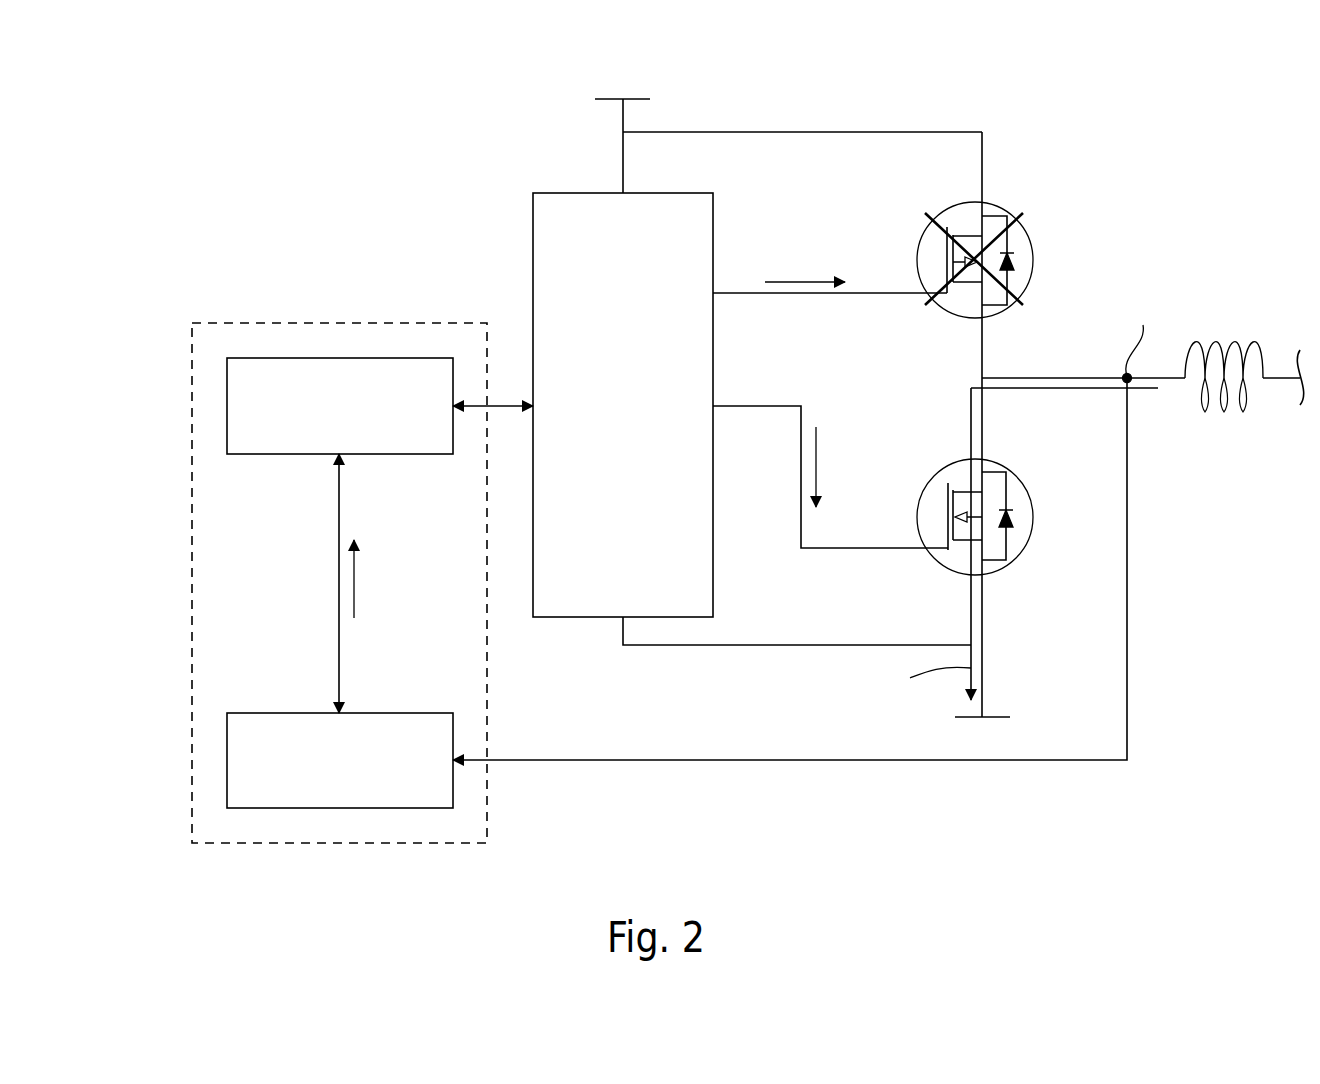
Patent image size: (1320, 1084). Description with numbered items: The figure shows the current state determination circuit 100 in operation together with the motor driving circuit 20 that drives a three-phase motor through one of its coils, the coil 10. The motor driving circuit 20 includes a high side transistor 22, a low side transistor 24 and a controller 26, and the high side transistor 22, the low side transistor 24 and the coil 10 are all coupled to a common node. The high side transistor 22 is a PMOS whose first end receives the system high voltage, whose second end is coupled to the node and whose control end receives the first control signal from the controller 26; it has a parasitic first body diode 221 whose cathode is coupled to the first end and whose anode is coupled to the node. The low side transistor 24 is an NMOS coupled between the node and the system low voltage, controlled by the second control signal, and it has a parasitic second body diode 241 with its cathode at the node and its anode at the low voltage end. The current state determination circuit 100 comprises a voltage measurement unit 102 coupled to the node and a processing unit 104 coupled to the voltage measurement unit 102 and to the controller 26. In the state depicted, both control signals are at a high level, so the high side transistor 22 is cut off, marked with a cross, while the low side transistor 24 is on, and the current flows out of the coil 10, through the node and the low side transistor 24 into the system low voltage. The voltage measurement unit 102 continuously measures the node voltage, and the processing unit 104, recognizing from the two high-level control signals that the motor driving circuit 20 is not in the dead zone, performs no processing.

The motor driving circuit 20 is at (536, 84).
The controller 26 is at (548, 223).
The high side transistor 22 is at (940, 238).
The first body diode 221 is at (1015, 267).
The low side transistor 24 is at (968, 547).
The second body diode 241 is at (1012, 522).
The coil 10 is at (1250, 335).
The current state determination circuit 100 is at (265, 323).
The voltage measurement unit 102 is at (227, 762).
The processing unit 104 is at (227, 408).